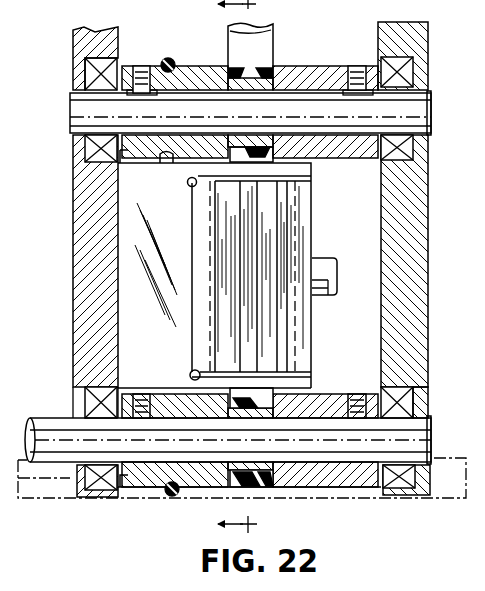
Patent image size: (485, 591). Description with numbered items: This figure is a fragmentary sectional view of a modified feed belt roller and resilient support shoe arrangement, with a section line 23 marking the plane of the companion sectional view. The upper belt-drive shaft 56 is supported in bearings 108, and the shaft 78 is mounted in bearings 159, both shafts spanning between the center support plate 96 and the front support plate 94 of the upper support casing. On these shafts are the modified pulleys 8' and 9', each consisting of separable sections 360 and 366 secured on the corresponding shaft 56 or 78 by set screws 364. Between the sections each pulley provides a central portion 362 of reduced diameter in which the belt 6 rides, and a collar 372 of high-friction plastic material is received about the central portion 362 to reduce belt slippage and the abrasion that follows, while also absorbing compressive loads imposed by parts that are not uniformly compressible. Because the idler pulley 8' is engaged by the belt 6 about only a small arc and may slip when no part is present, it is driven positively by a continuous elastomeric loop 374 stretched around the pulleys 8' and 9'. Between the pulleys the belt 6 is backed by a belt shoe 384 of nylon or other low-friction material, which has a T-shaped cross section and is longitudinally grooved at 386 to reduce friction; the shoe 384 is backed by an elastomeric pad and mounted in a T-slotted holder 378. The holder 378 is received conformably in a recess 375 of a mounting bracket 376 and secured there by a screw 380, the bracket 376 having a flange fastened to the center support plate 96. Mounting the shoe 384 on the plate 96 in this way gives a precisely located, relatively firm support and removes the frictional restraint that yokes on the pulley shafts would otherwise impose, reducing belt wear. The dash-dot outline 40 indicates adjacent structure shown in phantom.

The section line 23 is at (217, 267).
The center support plate 96 is at (73, 236).
The front support plate 94 is at (429, 188).
The bearings 159 is at (428, 58).
The bearings 108 is at (430, 397).
The shaft 78 is at (432, 108).
The upper belt-drive shaft 56 is at (433, 433).
The modified idler pulley 8' is at (250, 55).
The modified drive pulley 9' is at (348, 510).
The set screws 364 is at (355, 67).
The upper belt 6 is at (274, 46).
The central portion of reduced diameter 362 is at (240, 70).
The pulley section 360 is at (332, 157).
The collar 372 is at (276, 480).
The pulley section 366 is at (128, 165).
The continuous elastomeric loop 374 is at (168, 494).
The T-slotted holder 378 is at (313, 216).
The recess 375 is at (194, 210).
The longitudinal grooves 386 is at (261, 256).
The belt shoe 384 is at (290, 356).
The screw 380 is at (345, 268).
The mounting bracket 376 is at (176, 365).
The frame outline 40 is at (445, 506).